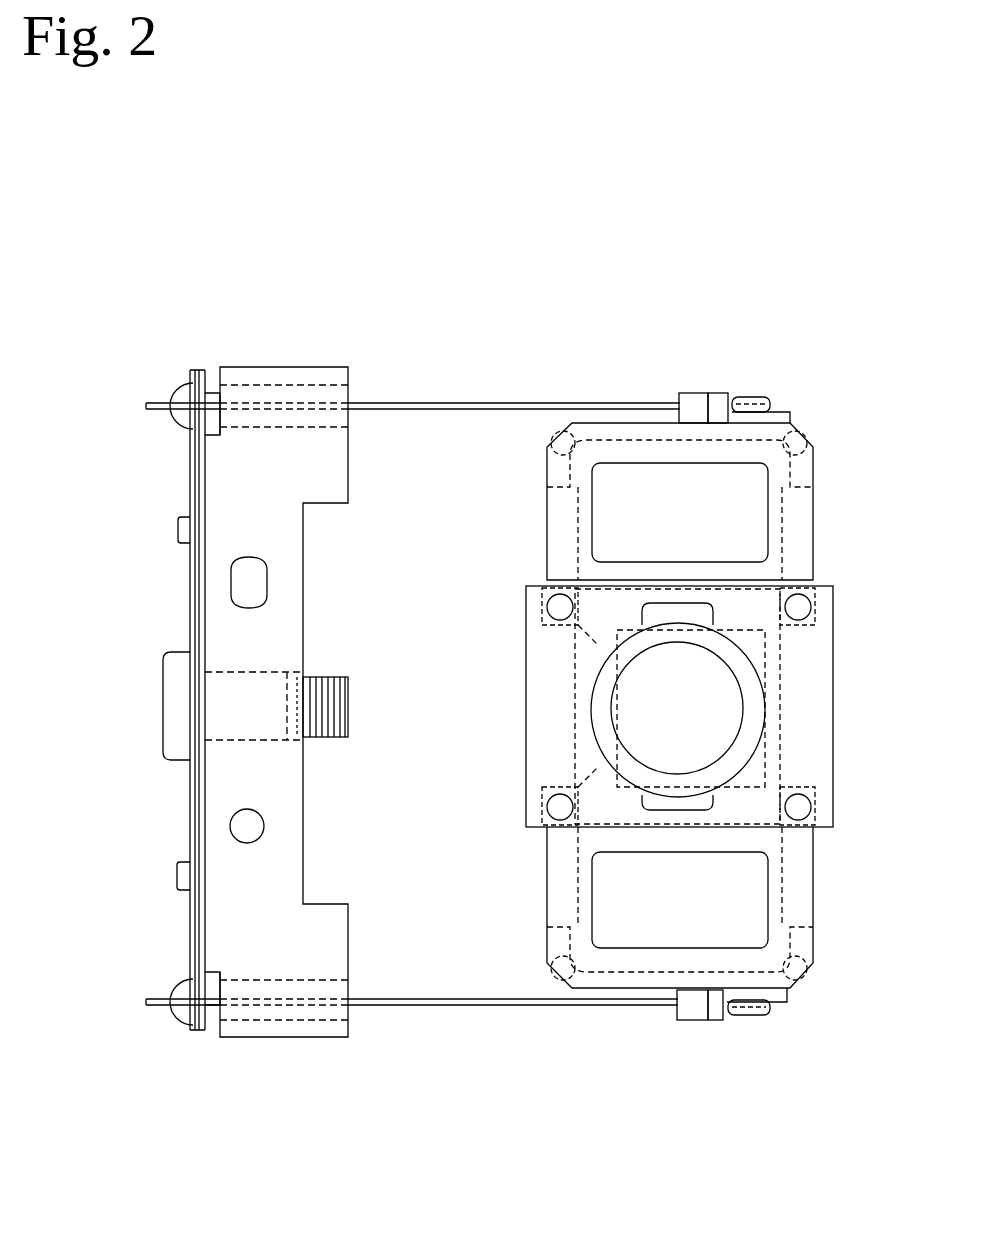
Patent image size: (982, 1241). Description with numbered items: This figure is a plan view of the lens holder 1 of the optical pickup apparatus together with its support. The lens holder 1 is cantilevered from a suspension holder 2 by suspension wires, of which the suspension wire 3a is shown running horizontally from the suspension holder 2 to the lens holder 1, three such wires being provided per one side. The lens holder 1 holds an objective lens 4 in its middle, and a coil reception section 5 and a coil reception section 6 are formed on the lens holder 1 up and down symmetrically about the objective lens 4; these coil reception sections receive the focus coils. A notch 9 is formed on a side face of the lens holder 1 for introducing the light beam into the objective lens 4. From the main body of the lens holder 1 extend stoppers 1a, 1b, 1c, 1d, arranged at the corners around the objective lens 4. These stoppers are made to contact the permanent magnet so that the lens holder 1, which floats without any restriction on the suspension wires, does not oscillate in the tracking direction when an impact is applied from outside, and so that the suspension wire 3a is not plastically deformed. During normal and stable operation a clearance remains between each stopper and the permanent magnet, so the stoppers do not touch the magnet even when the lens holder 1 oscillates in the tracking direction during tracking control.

The lens holder 1 is at (813, 519).
The stopper 1a is at (537, 582).
The stopper 1b is at (815, 587).
The stopper 1c is at (537, 828).
The stopper 1d is at (822, 839).
The suspension holder 2 is at (232, 637).
The suspension wire 3a is at (445, 405).
The objective lens 4 is at (713, 705).
The coil reception section 5 is at (653, 483).
The coil reception section 6 is at (665, 937).
The notch 9 is at (818, 631).